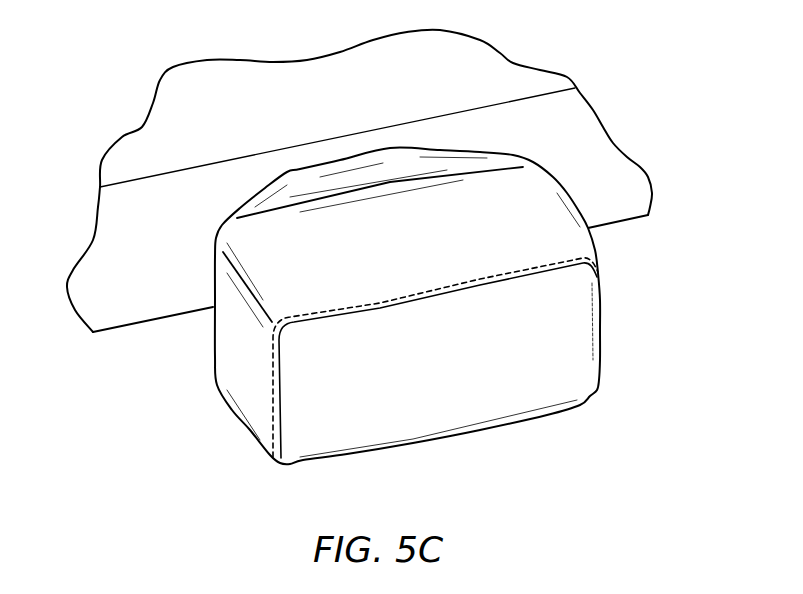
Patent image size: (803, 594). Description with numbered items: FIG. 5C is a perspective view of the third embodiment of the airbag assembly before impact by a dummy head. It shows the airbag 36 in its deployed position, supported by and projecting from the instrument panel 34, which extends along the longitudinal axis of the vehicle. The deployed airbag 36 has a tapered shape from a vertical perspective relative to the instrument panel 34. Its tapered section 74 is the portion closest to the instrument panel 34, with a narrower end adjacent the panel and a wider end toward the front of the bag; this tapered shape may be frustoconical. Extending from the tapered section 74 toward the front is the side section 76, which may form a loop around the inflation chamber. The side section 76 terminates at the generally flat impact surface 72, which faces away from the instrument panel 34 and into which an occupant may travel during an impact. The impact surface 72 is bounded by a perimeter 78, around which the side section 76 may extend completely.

The instrument panel 34 is at (620, 225).
The airbag 36 is at (603, 320).
The impact surface 72 is at (537, 423).
The tapered section 74 is at (248, 195).
The side section 76 is at (233, 413).
The perimeter 78 is at (270, 397).